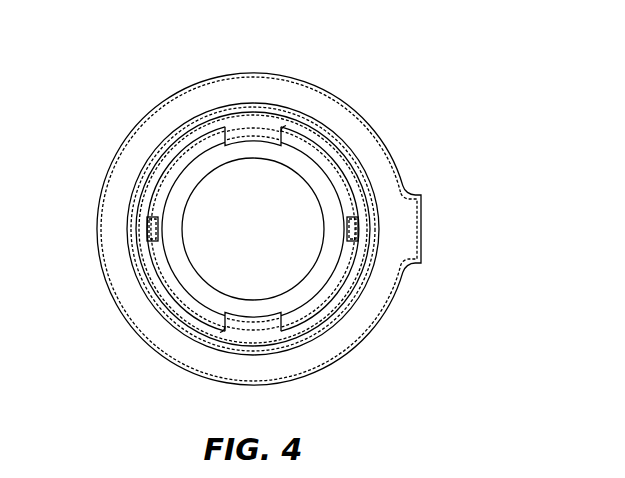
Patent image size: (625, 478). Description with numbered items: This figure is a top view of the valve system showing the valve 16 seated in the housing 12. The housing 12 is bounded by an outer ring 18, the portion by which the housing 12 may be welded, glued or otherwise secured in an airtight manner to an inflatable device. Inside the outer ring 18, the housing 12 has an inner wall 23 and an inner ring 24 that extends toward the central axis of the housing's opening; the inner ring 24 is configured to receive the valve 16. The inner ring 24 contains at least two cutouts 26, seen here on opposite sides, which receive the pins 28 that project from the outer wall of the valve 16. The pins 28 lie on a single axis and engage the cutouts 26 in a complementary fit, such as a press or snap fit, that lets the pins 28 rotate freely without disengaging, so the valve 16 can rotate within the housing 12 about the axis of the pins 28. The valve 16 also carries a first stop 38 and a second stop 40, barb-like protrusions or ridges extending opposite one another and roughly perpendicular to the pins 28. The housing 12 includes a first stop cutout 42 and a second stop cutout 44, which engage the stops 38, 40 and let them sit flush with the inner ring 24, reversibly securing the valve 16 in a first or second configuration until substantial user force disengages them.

The housing 12 is at (407, 82).
The valve 16 is at (207, 160).
The outer ring 18 is at (332, 117).
The inner wall 23 is at (342, 294).
The inner ring 24 is at (317, 312).
The cutouts 26 is at (148, 217).
The pins 28 is at (354, 230).
The first stop 38 is at (250, 122).
The second stop 40 is at (250, 330).
The first stop cutout 42 is at (290, 127).
The second stop cutout 44 is at (227, 322).